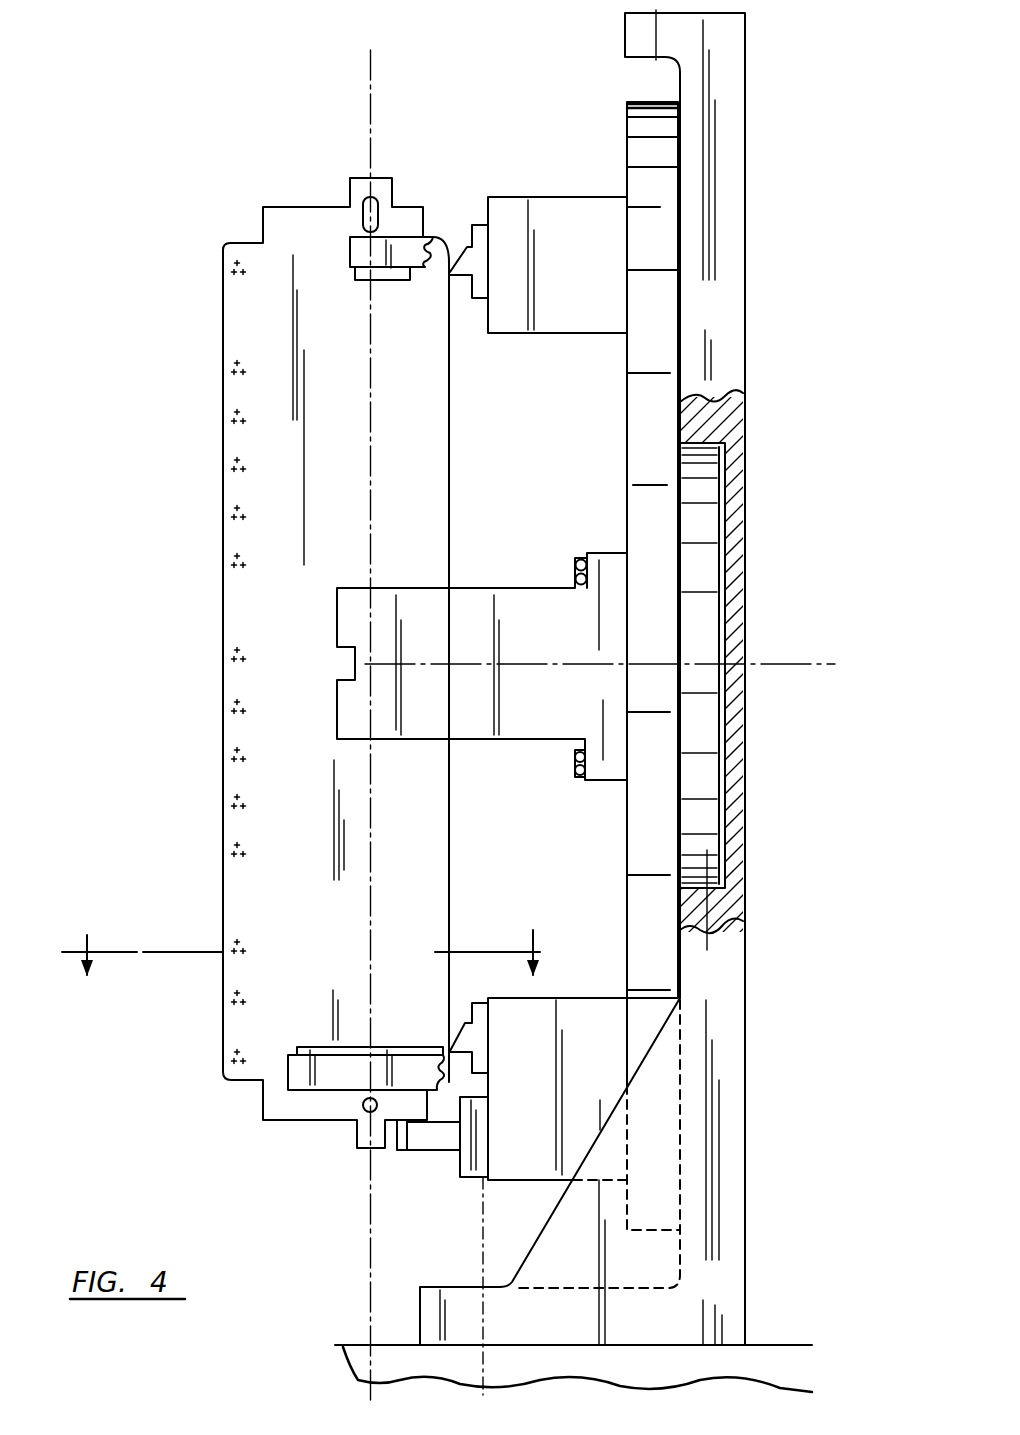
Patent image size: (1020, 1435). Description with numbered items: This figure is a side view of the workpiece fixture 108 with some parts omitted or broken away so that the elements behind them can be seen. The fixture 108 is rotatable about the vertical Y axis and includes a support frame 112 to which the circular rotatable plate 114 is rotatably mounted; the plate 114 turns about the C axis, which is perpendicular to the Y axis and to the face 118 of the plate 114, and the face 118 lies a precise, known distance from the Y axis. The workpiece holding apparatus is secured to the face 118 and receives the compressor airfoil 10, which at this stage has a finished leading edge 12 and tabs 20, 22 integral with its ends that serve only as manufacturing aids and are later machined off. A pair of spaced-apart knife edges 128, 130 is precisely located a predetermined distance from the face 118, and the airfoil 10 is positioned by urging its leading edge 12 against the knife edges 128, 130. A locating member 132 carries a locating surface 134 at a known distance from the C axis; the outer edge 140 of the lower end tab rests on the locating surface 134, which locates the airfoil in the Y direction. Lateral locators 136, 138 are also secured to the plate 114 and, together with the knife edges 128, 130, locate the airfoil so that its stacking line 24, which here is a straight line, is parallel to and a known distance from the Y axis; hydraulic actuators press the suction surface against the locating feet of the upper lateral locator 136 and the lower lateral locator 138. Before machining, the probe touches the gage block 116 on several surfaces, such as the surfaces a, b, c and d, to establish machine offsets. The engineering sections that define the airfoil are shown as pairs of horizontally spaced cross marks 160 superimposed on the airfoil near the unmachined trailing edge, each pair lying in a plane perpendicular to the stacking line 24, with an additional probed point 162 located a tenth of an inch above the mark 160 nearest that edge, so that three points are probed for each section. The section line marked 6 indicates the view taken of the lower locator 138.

The compressor airfoil 10 is at (188, 456).
The finished leading edge 12 is at (450, 446).
The tab 20 is at (262, 226).
The tab 22 is at (288, 1112).
The stacking line 24 is at (372, 98).
The workpiece fixture 108 is at (352, 1334).
The support frame 112 is at (746, 306).
The rotatable plate 114 is at (645, 104).
The gage block 116 is at (534, 585).
The face of the plate 118 is at (627, 156).
The knife edge 128 is at (450, 278).
The knife edge 130 is at (452, 1046).
The locating member 132 is at (448, 1142).
The locating surface 134 is at (445, 1118).
The upper lateral locator 136 is at (345, 247).
The lower lateral locator 138 is at (292, 1068).
The outer edge of the end tab 140 is at (403, 1150).
The cross marks 160 is at (243, 323).
The point 162 is at (236, 315).
The surface a is at (337, 614).
The surface b is at (343, 672).
The surface c is at (340, 655).
The surface d is at (355, 664).
The C axis C is at (778, 664).
The Y axis Y is at (483, 1238).
The section line 6- 6 is at (308, 975).